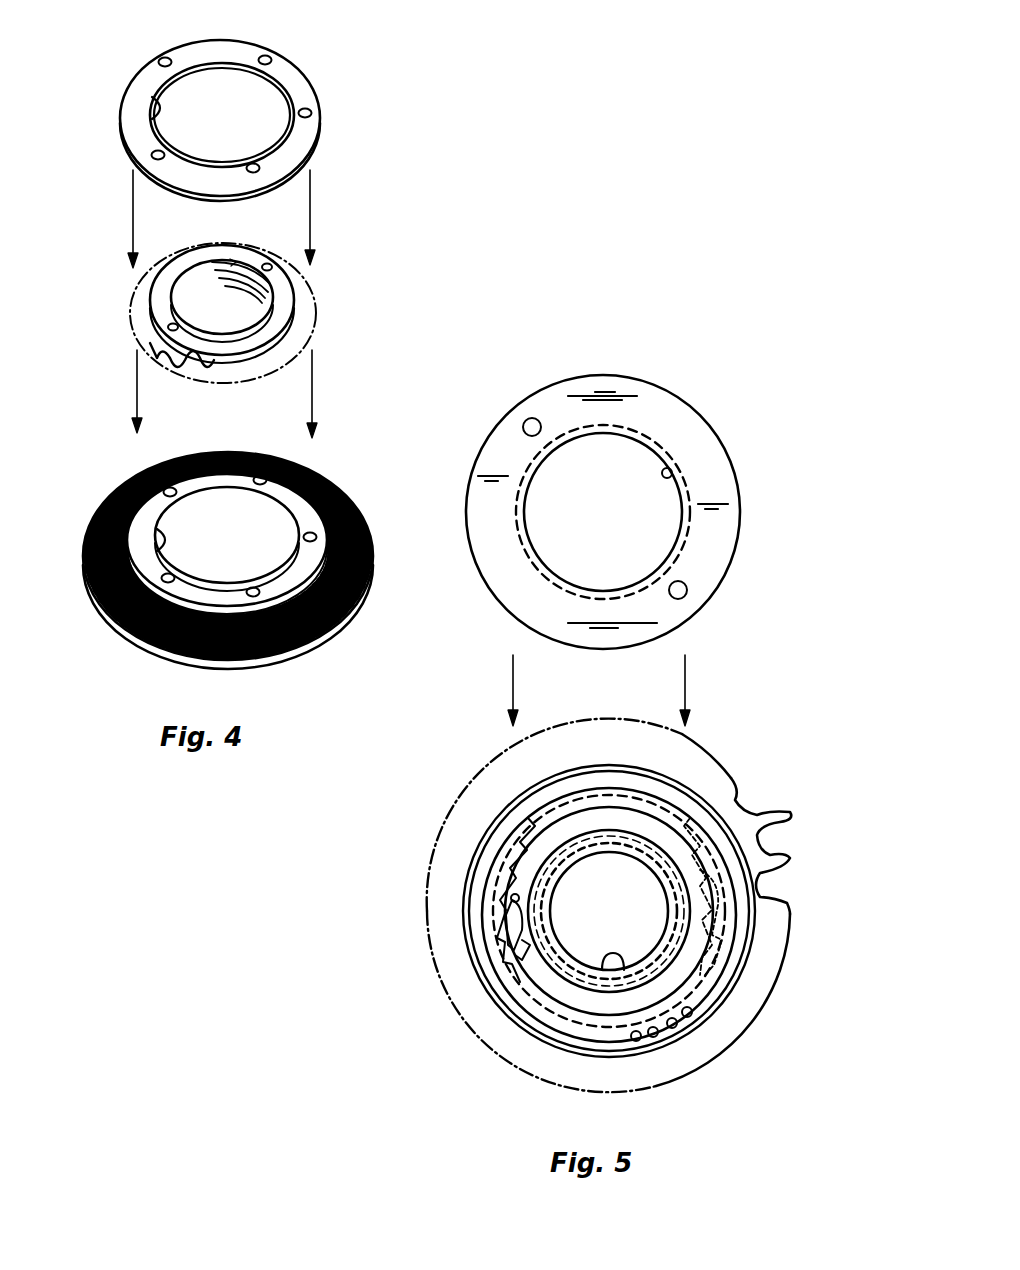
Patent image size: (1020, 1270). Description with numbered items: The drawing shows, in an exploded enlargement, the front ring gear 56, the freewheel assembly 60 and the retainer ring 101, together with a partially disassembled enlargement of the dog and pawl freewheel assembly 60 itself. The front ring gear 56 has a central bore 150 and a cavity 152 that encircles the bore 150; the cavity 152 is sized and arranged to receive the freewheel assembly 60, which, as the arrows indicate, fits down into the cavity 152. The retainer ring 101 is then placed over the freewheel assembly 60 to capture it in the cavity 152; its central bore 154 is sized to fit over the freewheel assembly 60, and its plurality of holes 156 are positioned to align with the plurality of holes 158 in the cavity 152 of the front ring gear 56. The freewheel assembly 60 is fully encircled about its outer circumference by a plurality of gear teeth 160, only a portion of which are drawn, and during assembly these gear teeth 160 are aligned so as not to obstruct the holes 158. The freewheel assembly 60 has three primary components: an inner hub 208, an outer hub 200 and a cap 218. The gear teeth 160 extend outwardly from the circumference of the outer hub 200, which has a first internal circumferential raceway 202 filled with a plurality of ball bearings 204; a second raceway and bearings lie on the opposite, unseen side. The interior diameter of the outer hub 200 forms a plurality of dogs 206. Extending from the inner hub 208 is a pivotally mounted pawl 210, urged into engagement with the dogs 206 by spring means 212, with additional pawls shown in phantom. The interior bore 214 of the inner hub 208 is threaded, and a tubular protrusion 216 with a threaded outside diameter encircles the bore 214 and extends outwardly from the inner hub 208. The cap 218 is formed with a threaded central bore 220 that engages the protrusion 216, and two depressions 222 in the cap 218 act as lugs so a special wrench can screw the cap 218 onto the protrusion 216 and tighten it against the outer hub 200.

In FIG. 4, the retainer ring 101 is at (305, 97).
In FIG. 4, the holes 156 is at (266, 56).
In FIG. 4, the central bore 154 is at (152, 100).
In FIG. 4, the freewheel assembly 60 is at (287, 303).
In FIG. 5, the freewheel assembly 60 is at (428, 1060).
In FIG. 4, the tubular protrusion 216 is at (160, 337).
In FIG. 5, the tubular protrusion 216 is at (643, 843).
In FIG. 4, the gear teeth 160 is at (192, 378).
In FIG. 5, the gear teeth 160 is at (788, 857).
In FIG. 4, the front ring gear 56 is at (214, 541).
In FIG. 4, the cavity 152 is at (147, 513).
In FIG. 4, the central bore 150 is at (167, 532).
In FIG. 4, the holes 158 is at (172, 490).
In FIG. 5, the cap 218 is at (687, 432).
In FIG. 5, the depressions 222 is at (525, 424).
In FIG. 5, the threaded central bore 220 is at (672, 476).
In FIG. 5, the outer hub 200 is at (644, 906).
In FIG. 5, the first internal circumferential raceway 202 is at (723, 967).
In FIG. 5, the ball bearings 204 is at (700, 1002).
In FIG. 5, the dogs 206 is at (528, 818).
In FIG. 5, the inner hub 208 is at (562, 990).
In FIG. 5, the pawl 210 is at (503, 930).
In FIG. 5, the spring means 212 is at (523, 945).
In FIG. 5, the interior bore 214 is at (613, 958).